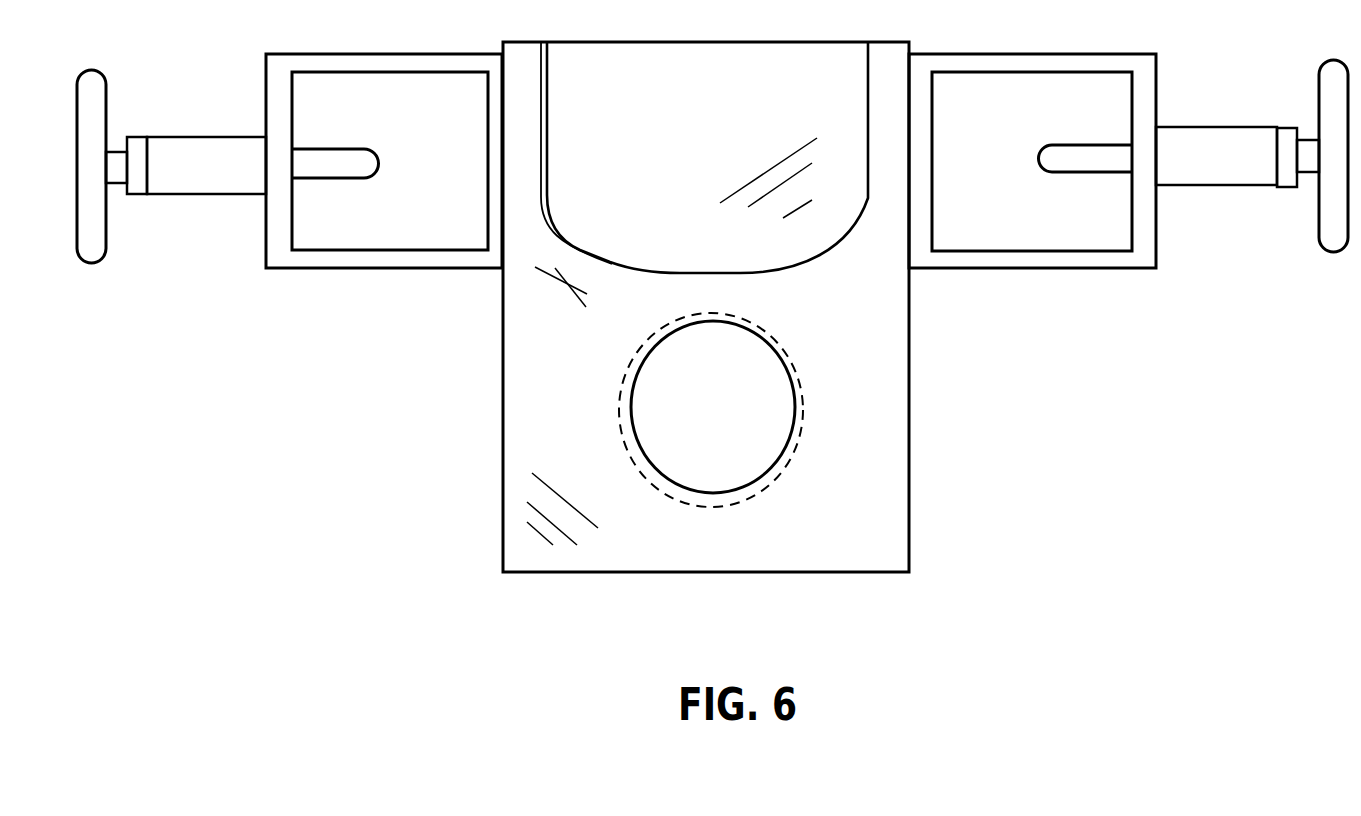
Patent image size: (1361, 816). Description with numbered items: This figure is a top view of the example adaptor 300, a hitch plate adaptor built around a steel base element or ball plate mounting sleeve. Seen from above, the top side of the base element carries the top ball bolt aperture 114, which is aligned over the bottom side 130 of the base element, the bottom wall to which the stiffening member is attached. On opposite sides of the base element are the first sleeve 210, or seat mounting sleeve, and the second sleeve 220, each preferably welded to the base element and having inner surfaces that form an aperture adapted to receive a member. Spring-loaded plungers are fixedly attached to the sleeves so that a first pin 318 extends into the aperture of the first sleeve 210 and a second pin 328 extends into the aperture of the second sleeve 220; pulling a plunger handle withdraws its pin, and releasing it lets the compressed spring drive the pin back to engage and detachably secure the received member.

The adaptor 300 is at (450, 578).
The bottom side 130 is at (720, 169).
The top ball bolt aperture 114 is at (792, 373).
The first sleeve 210 is at (248, 288).
The second sleeve 220 is at (988, 292).
The first pin 318 is at (342, 178).
The second pin 328 is at (1093, 158).